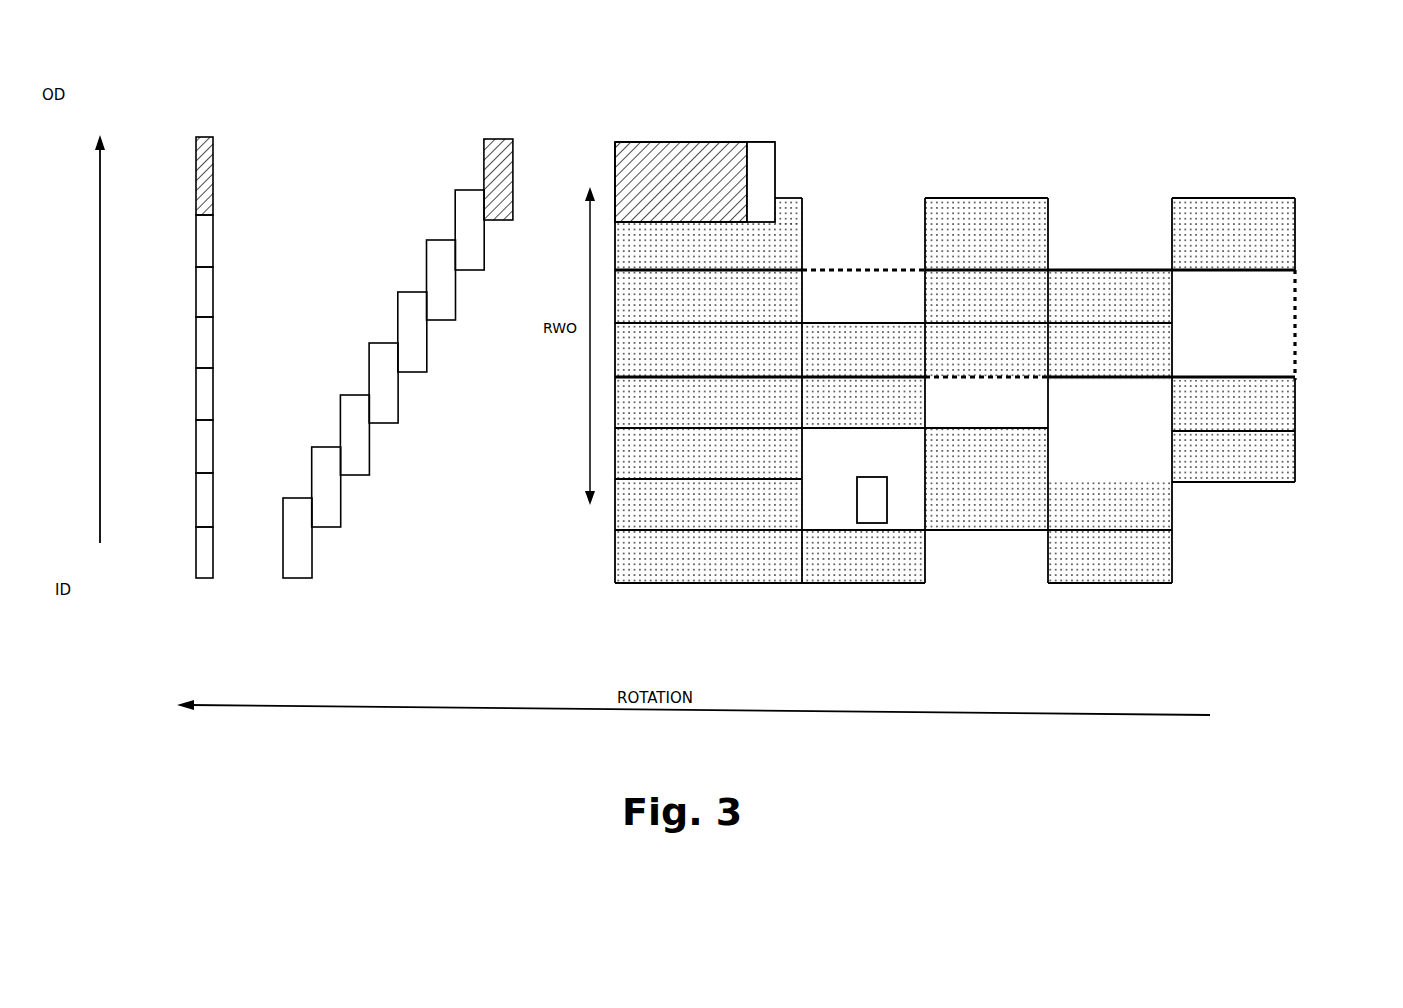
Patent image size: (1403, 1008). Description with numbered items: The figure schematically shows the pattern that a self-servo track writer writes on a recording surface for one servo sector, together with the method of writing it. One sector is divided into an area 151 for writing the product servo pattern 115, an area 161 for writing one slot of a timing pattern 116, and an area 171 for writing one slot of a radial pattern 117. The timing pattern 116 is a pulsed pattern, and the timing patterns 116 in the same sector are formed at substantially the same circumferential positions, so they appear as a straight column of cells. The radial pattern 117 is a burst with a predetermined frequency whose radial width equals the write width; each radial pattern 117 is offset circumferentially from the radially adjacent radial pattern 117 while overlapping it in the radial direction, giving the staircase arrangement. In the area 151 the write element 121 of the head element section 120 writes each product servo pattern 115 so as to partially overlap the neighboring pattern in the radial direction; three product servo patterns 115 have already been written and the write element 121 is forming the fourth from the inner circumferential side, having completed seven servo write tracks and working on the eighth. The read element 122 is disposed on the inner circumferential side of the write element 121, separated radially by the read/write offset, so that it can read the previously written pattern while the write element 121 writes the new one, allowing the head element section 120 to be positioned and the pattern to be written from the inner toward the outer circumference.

The product servo pattern 115 is at (1334, 325).
The timing pattern 116 is at (203, 578).
The radial pattern 117 is at (302, 578).
The head element section 120 is at (845, 135).
The write element 121 is at (775, 182).
The read element 122 is at (872, 477).
The area for writing the product servo pattern 151 is at (988, 319).
The area for writing one slot of timing pattern 161 is at (193, 342).
The area for writing one slot of radial pattern 171 is at (395, 339).